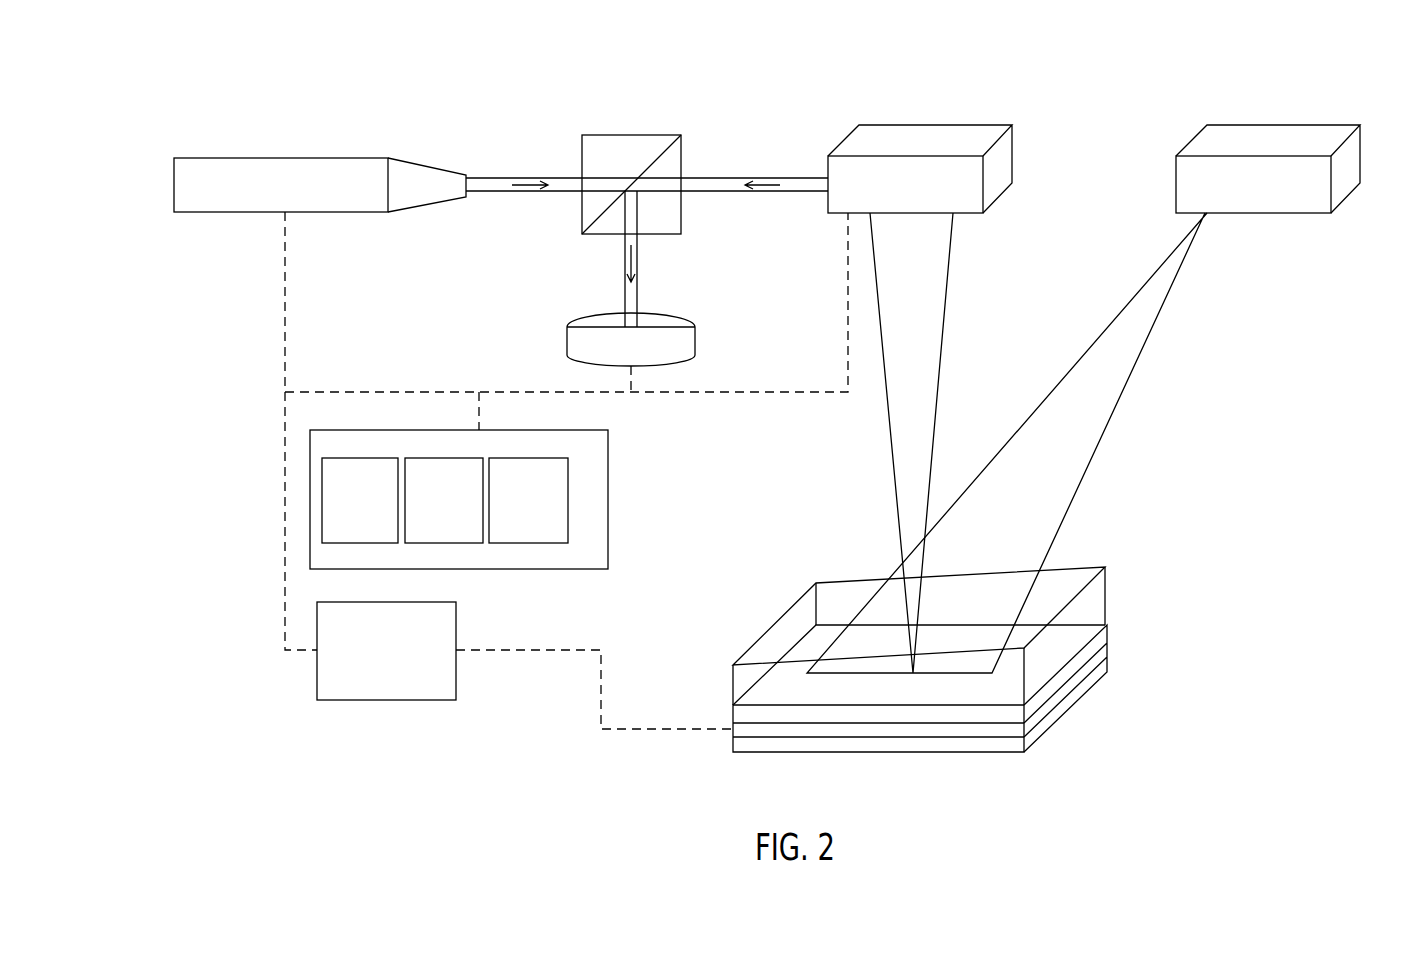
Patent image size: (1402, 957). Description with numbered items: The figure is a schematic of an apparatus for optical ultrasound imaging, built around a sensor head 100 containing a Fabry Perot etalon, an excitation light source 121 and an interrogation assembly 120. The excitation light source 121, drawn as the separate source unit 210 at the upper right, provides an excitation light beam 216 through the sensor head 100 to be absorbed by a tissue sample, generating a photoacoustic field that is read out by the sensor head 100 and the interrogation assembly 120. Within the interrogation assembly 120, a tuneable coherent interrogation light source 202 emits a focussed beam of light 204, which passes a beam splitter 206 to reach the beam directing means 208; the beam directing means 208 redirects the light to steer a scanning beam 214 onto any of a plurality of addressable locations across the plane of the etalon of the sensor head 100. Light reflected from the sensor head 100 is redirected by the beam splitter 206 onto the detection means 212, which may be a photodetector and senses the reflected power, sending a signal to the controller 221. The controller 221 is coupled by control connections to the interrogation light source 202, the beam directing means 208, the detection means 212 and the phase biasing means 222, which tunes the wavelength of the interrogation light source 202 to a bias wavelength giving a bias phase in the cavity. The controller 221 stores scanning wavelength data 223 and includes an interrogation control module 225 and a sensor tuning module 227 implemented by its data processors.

The sensor head 100 is at (760, 571).
The interrogation assembly 120 is at (251, 627).
The excitation light source 121 is at (1315, 312).
The interrogation light source 202 is at (283, 158).
The focussed beam of light 204 is at (528, 178).
The beam splitter 206 is at (633, 135).
The beam directing means 208 is at (920, 125).
The second optical source 210 is at (1274, 125).
The detection means 212 is at (697, 337).
The scanning beam 214 is at (942, 333).
The excitation light beam 216 is at (1143, 347).
The controller 221 is at (604, 566).
The phase biasing means 222 is at (438, 689).
The scanning wavelength data 223 is at (382, 536).
The interrogation control module 225 is at (467, 536).
The sensor tuning module 227 is at (551, 536).